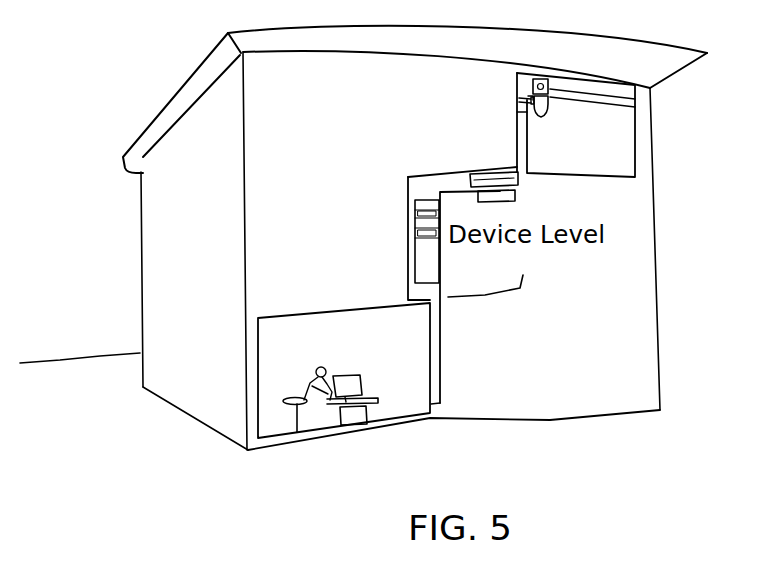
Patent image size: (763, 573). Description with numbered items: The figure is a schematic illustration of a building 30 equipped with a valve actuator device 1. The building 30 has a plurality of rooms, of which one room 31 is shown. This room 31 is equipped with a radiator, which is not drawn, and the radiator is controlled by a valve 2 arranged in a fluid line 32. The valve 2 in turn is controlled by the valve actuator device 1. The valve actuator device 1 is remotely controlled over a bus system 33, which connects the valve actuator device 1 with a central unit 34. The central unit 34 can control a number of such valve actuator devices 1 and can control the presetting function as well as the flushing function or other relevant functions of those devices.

The valve actuator device 1 is at (541, 76).
The valve 2 is at (528, 99).
The building 30 is at (630, 341).
The room 31 is at (635, 148).
The fluid line 32 is at (598, 98).
The bus system 33 is at (440, 350).
The central unit 34 is at (360, 393).